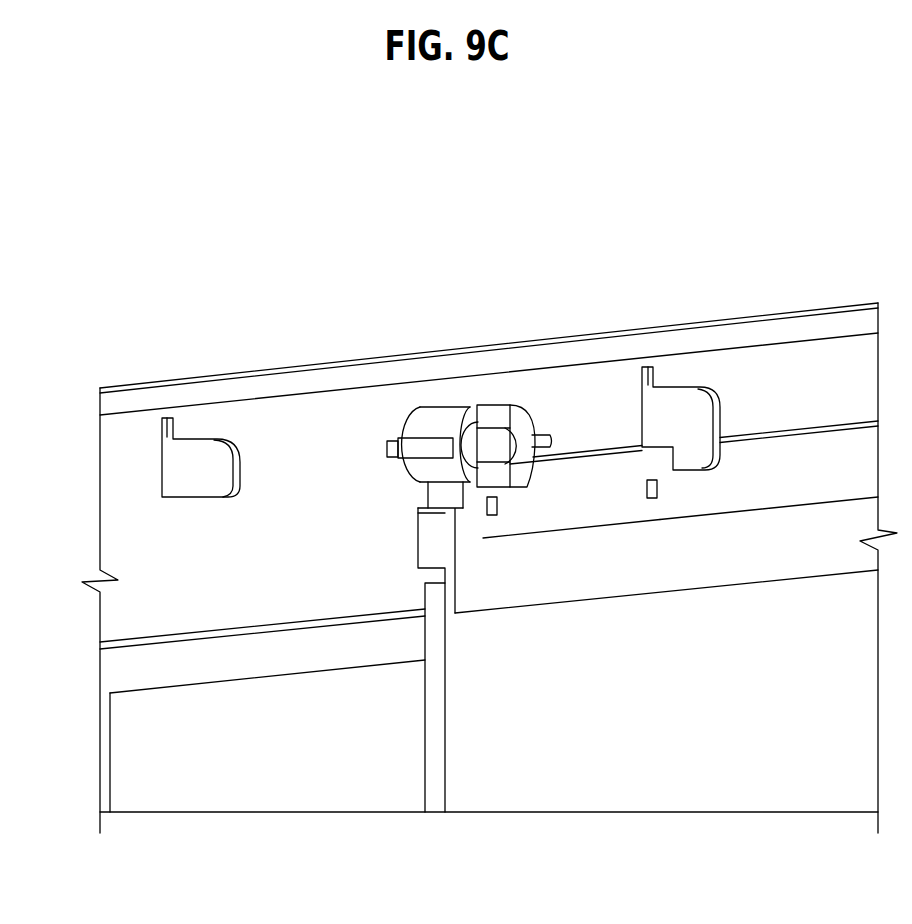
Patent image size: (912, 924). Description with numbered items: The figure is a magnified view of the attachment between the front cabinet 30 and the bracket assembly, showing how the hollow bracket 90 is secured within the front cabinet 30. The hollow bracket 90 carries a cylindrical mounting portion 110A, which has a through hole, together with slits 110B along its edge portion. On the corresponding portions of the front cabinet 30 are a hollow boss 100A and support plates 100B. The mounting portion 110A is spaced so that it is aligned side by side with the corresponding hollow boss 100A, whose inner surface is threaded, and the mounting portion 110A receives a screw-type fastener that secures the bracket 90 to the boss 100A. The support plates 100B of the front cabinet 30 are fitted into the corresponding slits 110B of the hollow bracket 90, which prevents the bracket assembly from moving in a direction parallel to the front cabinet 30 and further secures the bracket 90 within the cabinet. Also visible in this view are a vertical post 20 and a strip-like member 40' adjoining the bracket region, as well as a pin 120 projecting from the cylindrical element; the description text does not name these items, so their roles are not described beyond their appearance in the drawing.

The support post 20 is at (435, 728).
The front cabinet 30 is at (127, 672).
The bracket 40' is at (489, 587).
The hollow bracket 90 is at (797, 456).
The hollow boss 100A is at (440, 420).
The support plate 100B is at (197, 445).
The cylindrical mounting portion 110A is at (527, 453).
The slit 110B is at (672, 457).
The pin 120 is at (385, 450).